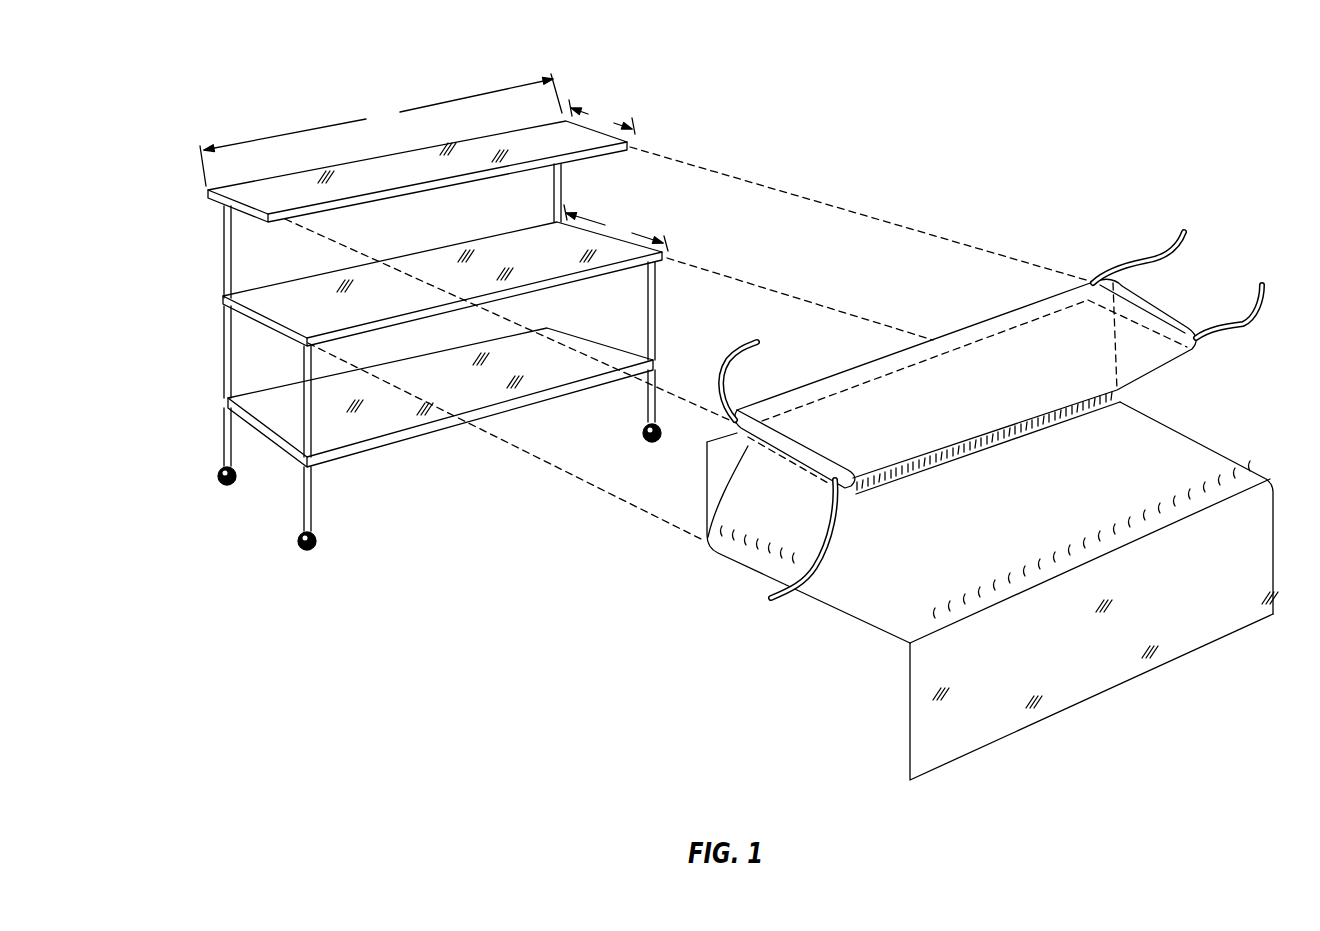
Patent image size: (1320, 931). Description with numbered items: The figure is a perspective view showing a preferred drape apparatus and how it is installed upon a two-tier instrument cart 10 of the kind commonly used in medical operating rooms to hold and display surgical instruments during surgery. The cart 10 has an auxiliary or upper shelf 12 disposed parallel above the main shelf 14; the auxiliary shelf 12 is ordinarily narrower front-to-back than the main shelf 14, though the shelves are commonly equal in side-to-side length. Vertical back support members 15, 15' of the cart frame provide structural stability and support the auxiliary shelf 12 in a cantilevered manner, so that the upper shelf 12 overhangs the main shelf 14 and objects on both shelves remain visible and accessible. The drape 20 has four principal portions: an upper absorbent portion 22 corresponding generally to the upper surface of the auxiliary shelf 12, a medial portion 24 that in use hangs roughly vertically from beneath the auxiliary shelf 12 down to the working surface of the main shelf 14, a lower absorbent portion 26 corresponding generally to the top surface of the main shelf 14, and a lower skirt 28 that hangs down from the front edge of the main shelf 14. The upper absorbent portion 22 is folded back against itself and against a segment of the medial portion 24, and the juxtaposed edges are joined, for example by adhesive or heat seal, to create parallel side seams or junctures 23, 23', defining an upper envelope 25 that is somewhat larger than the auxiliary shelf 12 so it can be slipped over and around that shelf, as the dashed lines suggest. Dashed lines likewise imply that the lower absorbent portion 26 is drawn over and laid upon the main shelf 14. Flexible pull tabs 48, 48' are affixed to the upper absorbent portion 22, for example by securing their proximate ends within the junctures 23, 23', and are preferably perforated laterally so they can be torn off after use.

The two-tier instrument cart 10 is at (629, 68).
The auxiliary shelf 12 is at (494, 142).
The main shelf 14 is at (275, 305).
The vertical back support member 15 is at (196, 338).
The vertical back support member 15' is at (597, 193).
The drape 20 is at (1220, 240).
The upper absorbent portion 22 is at (1018, 375).
The side seam 23 is at (756, 454).
The side seam 23' is at (1165, 305).
The medial portion 24 is at (752, 516).
The upper envelope 25 is at (1150, 361).
The lower absorbent portion 26 is at (1062, 490).
The lower skirt 28 is at (1076, 672).
The pull tab 48 is at (932, 320).
The pull tab 48' is at (991, 459).